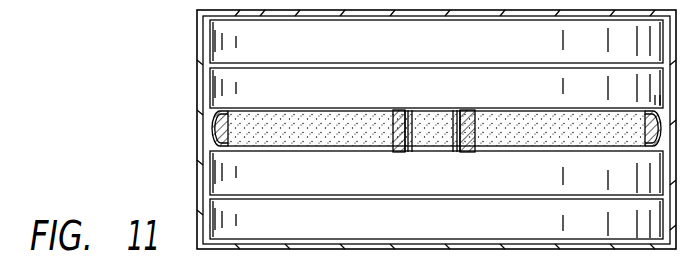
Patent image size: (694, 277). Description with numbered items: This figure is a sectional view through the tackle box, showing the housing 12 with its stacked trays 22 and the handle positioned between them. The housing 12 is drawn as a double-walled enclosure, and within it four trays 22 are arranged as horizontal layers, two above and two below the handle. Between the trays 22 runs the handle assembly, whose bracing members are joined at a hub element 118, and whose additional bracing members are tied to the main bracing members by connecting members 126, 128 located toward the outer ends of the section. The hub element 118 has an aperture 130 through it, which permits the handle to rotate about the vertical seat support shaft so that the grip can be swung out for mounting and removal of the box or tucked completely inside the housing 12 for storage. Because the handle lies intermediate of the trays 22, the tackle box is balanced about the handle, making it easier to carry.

The housing 12 is at (198, 64).
The trays 22 is at (315, 50).
The hub element 118 is at (396, 110).
The connecting member 126 is at (654, 104).
The connecting member 128 is at (208, 128).
The aperture 130 is at (454, 119).